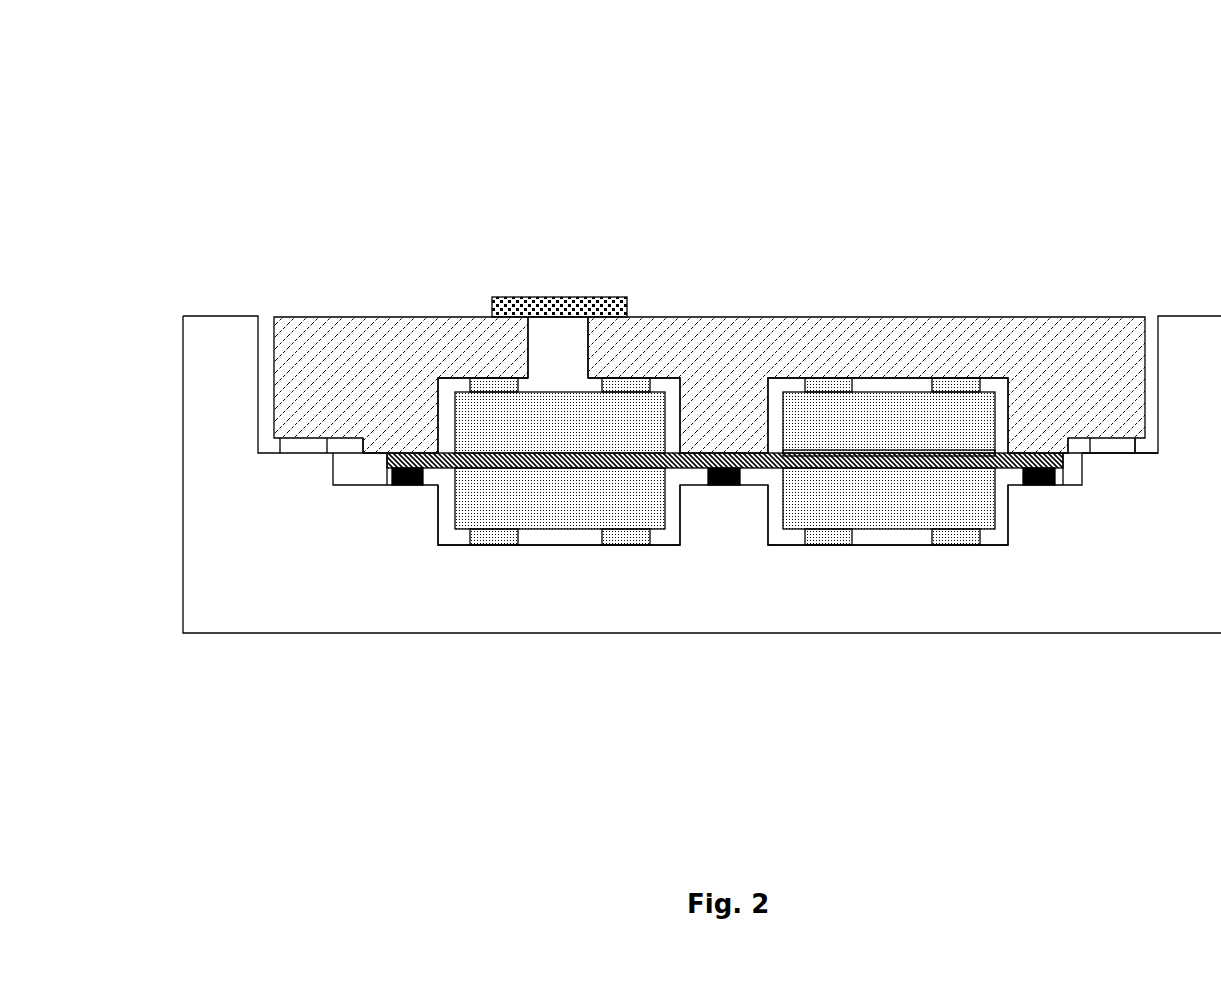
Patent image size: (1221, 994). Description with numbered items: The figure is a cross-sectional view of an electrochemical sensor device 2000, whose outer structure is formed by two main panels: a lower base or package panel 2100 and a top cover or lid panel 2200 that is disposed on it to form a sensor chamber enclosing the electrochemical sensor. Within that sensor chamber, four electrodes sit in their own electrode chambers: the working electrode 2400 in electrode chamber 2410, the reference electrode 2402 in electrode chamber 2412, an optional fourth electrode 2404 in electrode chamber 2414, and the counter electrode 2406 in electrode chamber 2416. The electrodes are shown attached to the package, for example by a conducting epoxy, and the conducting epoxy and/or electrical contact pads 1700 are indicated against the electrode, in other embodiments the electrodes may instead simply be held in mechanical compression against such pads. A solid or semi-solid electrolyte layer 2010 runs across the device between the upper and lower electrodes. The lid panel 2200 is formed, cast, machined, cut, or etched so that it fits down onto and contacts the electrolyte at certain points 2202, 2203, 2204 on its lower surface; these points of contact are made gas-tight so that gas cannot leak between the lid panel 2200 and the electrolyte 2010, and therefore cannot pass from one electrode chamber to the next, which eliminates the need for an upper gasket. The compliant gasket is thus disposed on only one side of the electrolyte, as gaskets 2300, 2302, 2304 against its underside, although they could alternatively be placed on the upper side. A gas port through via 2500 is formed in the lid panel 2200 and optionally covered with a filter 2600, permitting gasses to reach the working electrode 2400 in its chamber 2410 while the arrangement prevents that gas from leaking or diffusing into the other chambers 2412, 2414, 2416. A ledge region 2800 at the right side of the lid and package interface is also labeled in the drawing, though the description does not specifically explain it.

The electrochemical sensor device 2000 is at (266, 66).
The package panel 2100 is at (300, 553).
The lid panel 2200 is at (341, 364).
The contact point of lid panel 2202 is at (398, 436).
The contact point of lid panel 2204 is at (1053, 441).
The contact point of lid panel 2203 is at (751, 439).
The electrolyte layer 2010 is at (813, 441).
The gasket 2300 is at (405, 500).
The gasket 2302 is at (720, 500).
The gasket 2304 is at (1037, 498).
The working electrode 2400 is at (588, 313).
The reference electrode 2402 is at (583, 509).
The fourth electrode 2404 is at (911, 434).
The counter electrode 2406 is at (911, 509).
The electrode chamber 2410 is at (448, 377).
The electrode chamber 2414 is at (1000, 376).
The electrode chamber 2412 is at (448, 554).
The electrode chamber 2416 is at (780, 554).
The gas port through via 2500 is at (557, 336).
The filter 2600 is at (523, 286).
The conducting epoxy or contact pads 1700 is at (628, 371).
The lid ledge 2800 is at (1112, 466).